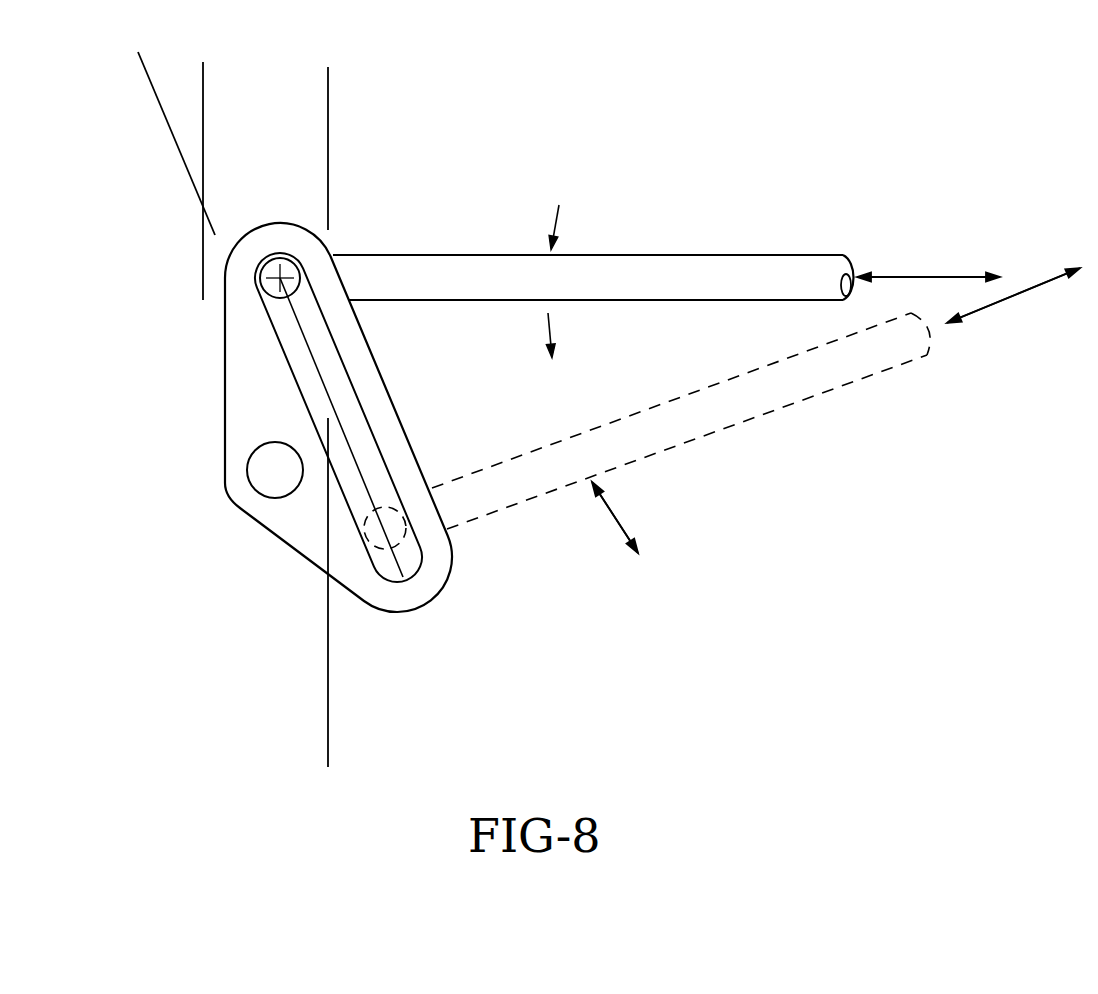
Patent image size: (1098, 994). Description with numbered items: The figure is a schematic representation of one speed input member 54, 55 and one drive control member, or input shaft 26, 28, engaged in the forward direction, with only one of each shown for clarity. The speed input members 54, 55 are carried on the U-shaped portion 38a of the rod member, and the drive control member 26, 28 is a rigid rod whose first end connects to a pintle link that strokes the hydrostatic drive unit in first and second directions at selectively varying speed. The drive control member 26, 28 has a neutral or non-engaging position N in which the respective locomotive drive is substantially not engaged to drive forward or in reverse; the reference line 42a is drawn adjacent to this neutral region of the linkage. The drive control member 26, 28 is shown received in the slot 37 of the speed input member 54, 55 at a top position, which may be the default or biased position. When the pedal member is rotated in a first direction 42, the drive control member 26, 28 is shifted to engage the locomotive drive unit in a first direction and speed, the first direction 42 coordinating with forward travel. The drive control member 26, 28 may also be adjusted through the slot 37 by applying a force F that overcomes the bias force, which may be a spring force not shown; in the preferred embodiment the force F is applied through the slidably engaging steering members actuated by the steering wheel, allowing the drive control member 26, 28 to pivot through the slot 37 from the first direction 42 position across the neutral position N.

The input shaft 26 is at (631, 358).
The input shaft 28 is at (728, 267).
The slot 37 is at (285, 328).
The U-shaped portion 38a is at (265, 488).
The first direction 42 is at (280, 243).
The pin axis / reference line 42a is at (186, 216).
The speed input member 54 is at (276, 417).
The speed input member 55 is at (245, 425).
The neutral position N is at (326, 397).
The force F is at (554, 301).